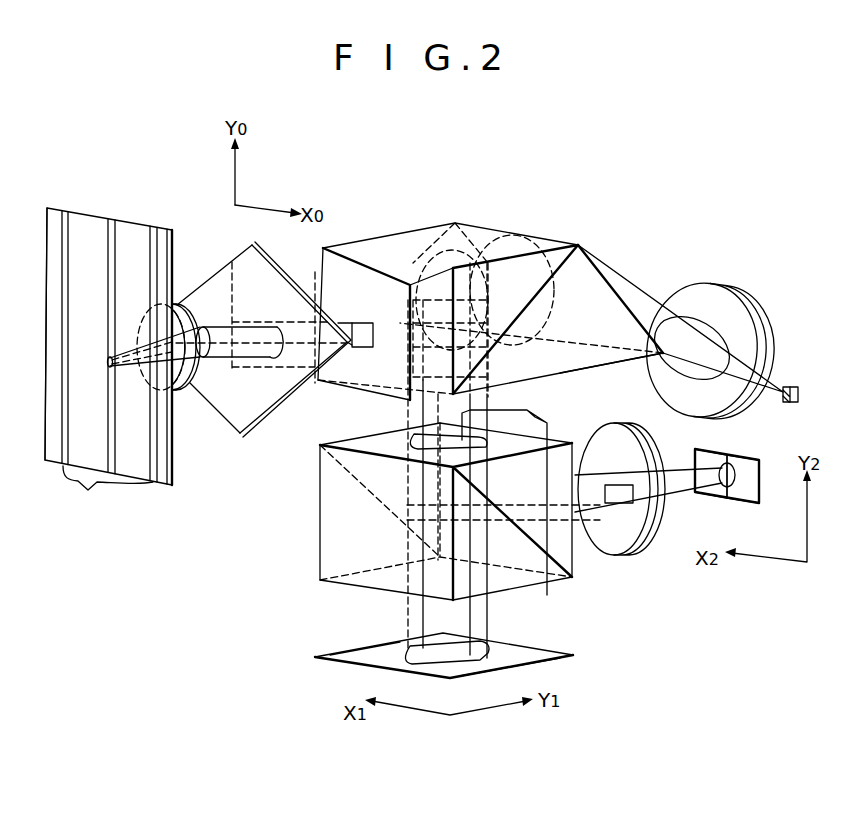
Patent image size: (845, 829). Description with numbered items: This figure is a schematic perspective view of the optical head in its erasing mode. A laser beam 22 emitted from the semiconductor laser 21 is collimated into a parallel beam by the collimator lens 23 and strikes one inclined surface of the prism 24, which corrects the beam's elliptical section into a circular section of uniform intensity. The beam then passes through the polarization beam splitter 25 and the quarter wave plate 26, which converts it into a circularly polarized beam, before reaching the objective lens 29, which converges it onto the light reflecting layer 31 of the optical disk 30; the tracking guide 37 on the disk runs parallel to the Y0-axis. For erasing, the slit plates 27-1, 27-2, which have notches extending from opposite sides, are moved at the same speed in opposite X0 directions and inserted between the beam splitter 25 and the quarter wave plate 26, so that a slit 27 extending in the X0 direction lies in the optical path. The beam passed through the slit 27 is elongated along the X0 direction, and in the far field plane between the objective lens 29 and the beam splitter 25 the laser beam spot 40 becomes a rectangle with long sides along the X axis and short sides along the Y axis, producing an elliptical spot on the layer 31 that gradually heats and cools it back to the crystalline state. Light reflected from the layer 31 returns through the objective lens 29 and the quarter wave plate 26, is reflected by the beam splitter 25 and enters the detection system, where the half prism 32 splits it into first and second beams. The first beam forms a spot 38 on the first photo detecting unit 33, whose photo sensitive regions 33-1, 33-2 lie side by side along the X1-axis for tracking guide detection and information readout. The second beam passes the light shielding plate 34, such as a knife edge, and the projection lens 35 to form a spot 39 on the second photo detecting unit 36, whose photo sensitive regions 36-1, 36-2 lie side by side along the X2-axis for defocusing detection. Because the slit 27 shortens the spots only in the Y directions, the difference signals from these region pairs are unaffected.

The semiconductor laser 21 is at (792, 388).
The laser beam 22 is at (647, 300).
The collimator lens 23 is at (748, 283).
The prism 24 is at (606, 263).
The polarization beam splitter 25 is at (508, 231).
The quarter wave plate 26 is at (207, 292).
The slit 27 is at (352, 340).
The slit plate 27-1 is at (350, 283).
The slit plate 27-2 is at (292, 272).
The objective lens 29 is at (173, 390).
The optical disk 30 is at (96, 217).
The light reflecting layer 31 is at (47, 297).
The half prism 32 is at (322, 555).
The first photo detecting unit 33 is at (547, 653).
The photo sensitive region 33-1 is at (460, 670).
The photo sensitive region 33-2 is at (370, 648).
The light shielding plate 34 is at (533, 592).
The projection lens 35 is at (633, 547).
The second photo detecting unit 36 is at (752, 460).
The photo sensitive region 36-1 is at (707, 458).
The photo sensitive region 36-2 is at (745, 498).
The tracking guide 37 is at (108, 489).
The spot 38 is at (392, 658).
The spot 39 is at (733, 482).
The laser beam spot 40 is at (258, 357).